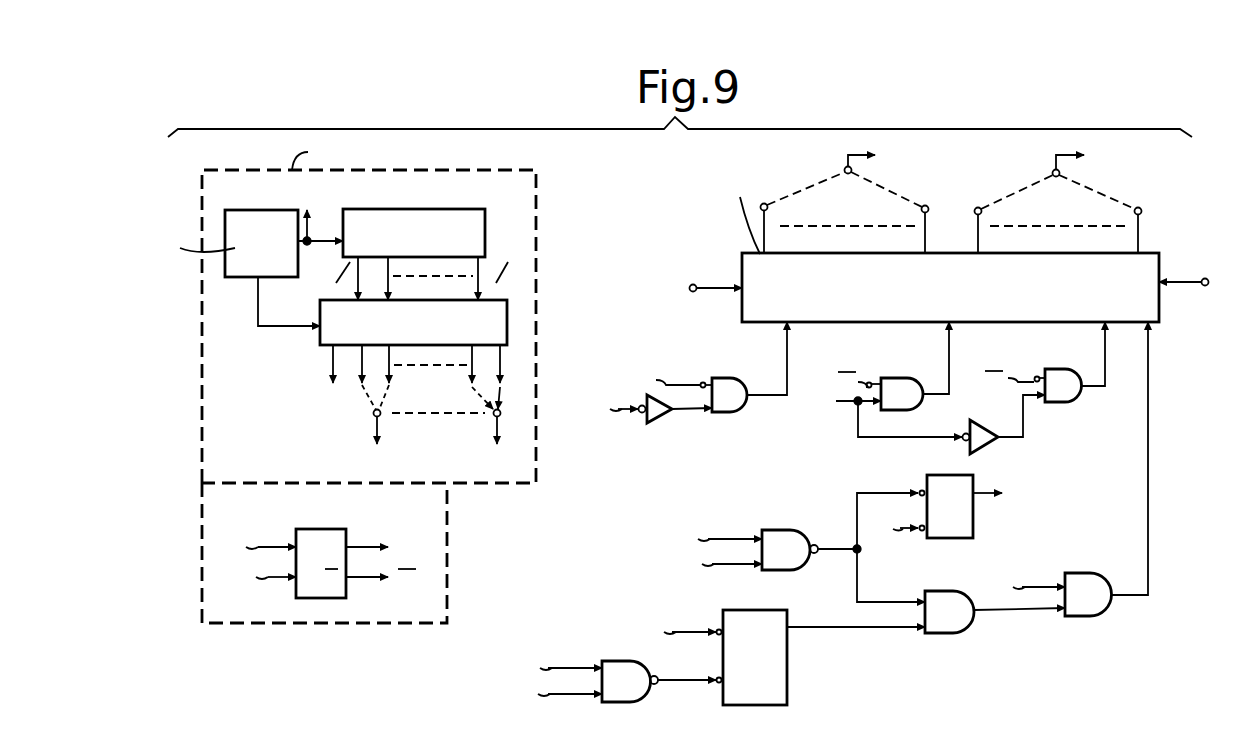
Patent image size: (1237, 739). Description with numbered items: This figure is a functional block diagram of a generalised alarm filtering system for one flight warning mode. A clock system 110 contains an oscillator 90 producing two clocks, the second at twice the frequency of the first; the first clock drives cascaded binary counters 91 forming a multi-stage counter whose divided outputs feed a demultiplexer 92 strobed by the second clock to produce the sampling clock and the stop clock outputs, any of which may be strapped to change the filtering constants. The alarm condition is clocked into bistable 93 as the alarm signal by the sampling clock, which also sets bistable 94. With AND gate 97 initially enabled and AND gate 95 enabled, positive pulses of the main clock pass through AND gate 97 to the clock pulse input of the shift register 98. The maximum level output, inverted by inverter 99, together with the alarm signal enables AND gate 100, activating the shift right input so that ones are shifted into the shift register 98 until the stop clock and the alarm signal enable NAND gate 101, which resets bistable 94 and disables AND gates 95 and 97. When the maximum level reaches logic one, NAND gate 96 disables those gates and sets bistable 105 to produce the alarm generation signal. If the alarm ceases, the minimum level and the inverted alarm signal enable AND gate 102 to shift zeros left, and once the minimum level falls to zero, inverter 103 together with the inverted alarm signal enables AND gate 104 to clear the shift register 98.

The clock system 110 is at (215, 168).
The oscillator 90 is at (256, 207).
The binary counters 91 is at (375, 207).
The demultiplexer 92 is at (320, 303).
The bistable 93 is at (318, 530).
The bistable 94 is at (735, 616).
The AND gate 95 is at (936, 596).
The NAND gate 96 is at (786, 530).
The AND gate 97 is at (1080, 576).
The shift register 98 is at (746, 255).
The inverter 99 is at (665, 416).
The AND gate 100 is at (725, 380).
The NAND gate 101 is at (612, 670).
The AND gate 102 is at (906, 378).
The inverter 103 is at (988, 445).
The AND gate 104 is at (1060, 376).
The bistable 105 is at (940, 478).